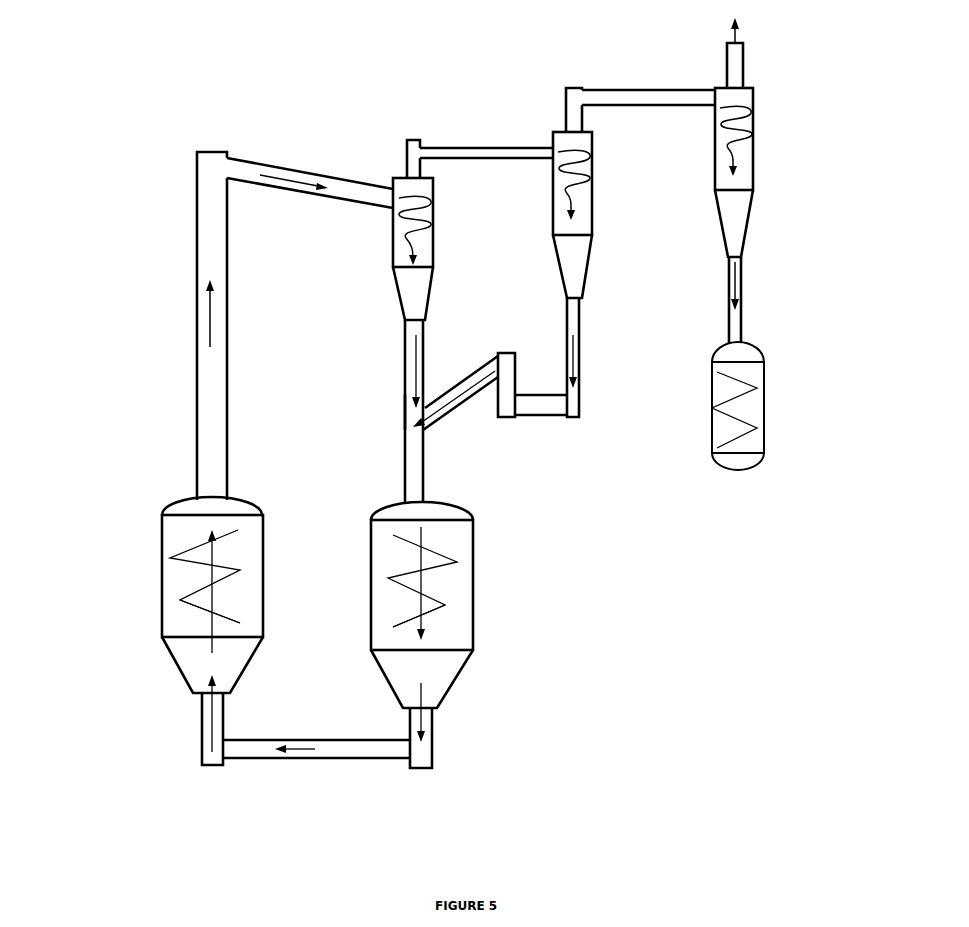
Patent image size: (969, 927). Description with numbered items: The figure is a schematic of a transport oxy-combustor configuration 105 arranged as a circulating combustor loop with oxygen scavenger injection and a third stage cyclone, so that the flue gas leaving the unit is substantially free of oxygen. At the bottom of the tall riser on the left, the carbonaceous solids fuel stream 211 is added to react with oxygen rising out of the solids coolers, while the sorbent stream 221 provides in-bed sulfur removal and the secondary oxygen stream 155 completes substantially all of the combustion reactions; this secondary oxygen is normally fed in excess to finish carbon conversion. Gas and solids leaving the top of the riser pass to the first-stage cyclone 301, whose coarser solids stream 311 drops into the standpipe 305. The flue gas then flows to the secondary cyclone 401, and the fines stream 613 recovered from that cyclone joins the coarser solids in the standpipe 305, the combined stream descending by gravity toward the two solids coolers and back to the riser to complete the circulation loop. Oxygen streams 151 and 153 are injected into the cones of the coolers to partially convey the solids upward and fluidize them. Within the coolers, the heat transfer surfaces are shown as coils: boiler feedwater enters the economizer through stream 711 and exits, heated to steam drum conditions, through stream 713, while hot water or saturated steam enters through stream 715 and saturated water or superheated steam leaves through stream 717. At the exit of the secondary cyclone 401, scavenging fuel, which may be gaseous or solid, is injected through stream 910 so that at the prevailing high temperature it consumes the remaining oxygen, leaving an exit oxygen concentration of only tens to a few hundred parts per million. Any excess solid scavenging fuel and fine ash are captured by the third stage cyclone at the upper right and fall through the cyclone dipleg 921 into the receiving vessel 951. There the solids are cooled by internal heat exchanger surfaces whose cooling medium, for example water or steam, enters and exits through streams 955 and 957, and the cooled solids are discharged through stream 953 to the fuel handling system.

The transport oxy-combustor configuration 105 is at (770, 75).
The oxygen stream 151 is at (172, 670).
The oxygen stream 153 is at (578, 678).
The secondary oxygen stream 155 is at (188, 351).
The carbonaceous solids fuel stream 211 is at (188, 468).
The sorbent stream 221 is at (188, 408).
The first-stage cyclone 301 is at (393, 182).
The standpipe 305 is at (405, 380).
The coarser solids stream 311 is at (413, 399).
The secondary cyclone 401 is at (553, 135).
The fines stream 613 is at (433, 418).
The boiler feedwater inlet stream 711 is at (240, 622).
The economizer exit stream 713 is at (238, 530).
The hot water or saturated steam inlet stream 715 is at (393, 627).
The saturated water or superheated steam exit stream 717 is at (393, 535).
The scavenger fuel stream 910 is at (556, 97).
The cyclone dipleg 921 is at (730, 312).
The receiving vessel 951 is at (712, 388).
The cooled solids discharge stream 953 is at (740, 470).
The cooling medium inlet stream 955 is at (714, 370).
The cooling medium outlet stream 957 is at (714, 447).